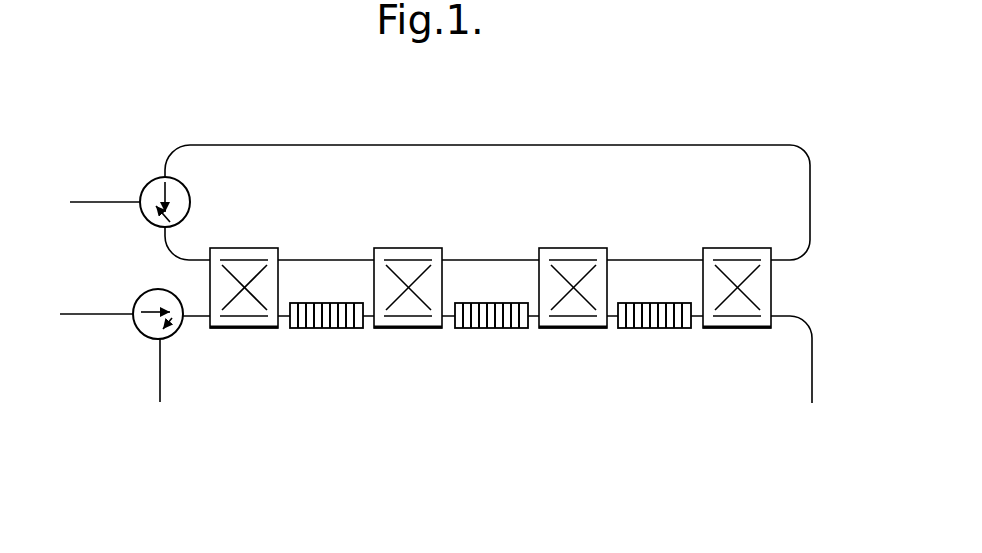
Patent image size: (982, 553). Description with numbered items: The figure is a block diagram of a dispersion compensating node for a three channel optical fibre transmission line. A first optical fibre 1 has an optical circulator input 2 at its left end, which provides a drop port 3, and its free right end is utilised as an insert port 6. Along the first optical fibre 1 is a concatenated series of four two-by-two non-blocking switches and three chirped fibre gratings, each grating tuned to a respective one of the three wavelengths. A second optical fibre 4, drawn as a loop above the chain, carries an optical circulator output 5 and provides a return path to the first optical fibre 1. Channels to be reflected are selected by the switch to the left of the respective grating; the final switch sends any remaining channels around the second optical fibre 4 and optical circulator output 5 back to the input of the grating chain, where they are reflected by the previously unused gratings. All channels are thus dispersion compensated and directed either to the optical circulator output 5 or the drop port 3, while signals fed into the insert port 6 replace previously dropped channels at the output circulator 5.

The first optical fibre 1 is at (336, 370).
The optical circulator input 2 is at (154, 290).
The drop port 3 is at (162, 396).
The second optical fibre 4 is at (391, 120).
The optical circulator output 5 is at (187, 184).
The insert port 6 is at (812, 360).